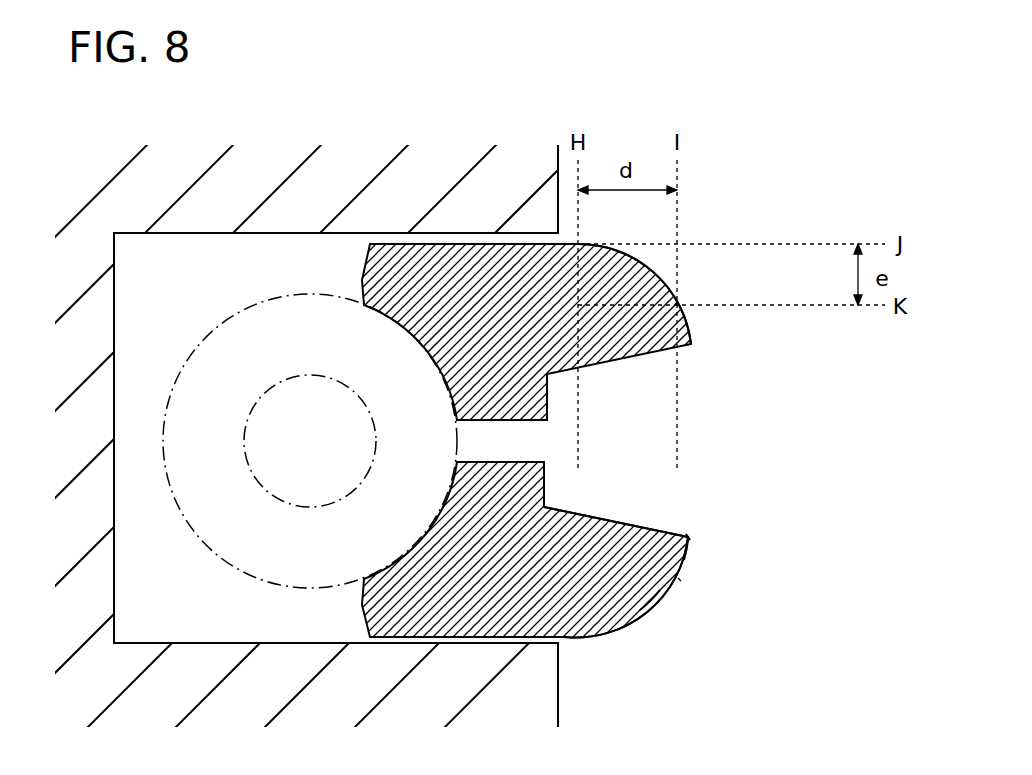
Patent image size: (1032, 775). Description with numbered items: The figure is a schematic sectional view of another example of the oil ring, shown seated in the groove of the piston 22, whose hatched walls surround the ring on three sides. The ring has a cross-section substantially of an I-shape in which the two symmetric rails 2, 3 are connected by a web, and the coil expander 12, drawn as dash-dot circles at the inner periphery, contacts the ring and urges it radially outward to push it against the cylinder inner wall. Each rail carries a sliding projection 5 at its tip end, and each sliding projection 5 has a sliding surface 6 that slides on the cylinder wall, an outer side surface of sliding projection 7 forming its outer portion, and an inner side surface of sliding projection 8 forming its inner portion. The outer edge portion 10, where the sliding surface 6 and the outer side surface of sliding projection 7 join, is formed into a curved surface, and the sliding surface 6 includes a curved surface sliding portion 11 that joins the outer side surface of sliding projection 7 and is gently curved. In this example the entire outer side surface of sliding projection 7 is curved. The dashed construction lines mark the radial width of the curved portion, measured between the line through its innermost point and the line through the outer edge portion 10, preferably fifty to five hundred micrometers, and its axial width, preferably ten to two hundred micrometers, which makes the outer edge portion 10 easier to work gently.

The piston 22 is at (356, 175).
The coil expander 12 is at (193, 413).
The rail 2 is at (392, 273).
The rail 3 is at (390, 603).
The outer side surface of sliding projection 7 is at (630, 263).
The outer edge portion 10 is at (677, 304).
The inner side surface of sliding projection 8 is at (657, 528).
The sliding surface 6 is at (688, 538).
The curved surface sliding portion 11 is at (688, 557).
The sliding projection 5 is at (648, 577).